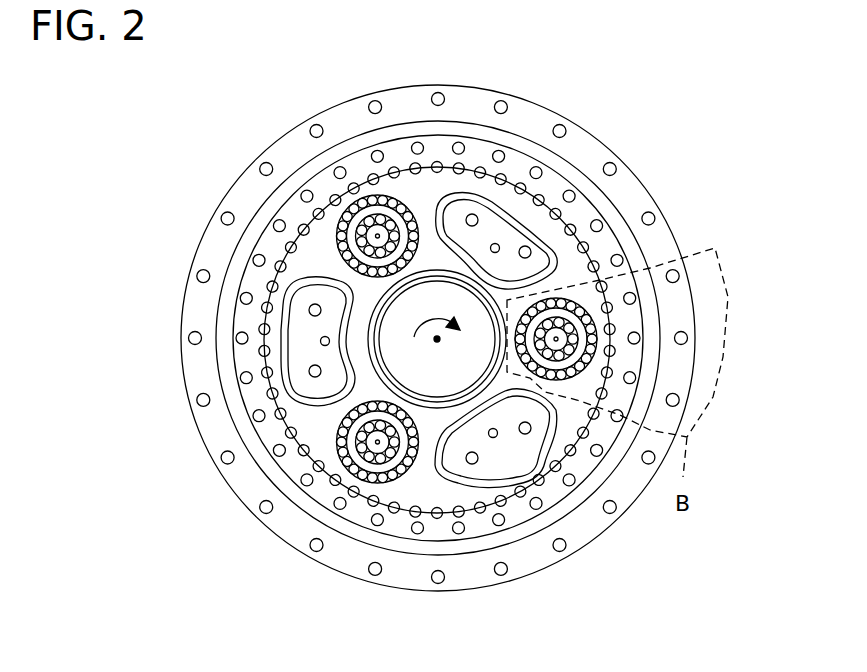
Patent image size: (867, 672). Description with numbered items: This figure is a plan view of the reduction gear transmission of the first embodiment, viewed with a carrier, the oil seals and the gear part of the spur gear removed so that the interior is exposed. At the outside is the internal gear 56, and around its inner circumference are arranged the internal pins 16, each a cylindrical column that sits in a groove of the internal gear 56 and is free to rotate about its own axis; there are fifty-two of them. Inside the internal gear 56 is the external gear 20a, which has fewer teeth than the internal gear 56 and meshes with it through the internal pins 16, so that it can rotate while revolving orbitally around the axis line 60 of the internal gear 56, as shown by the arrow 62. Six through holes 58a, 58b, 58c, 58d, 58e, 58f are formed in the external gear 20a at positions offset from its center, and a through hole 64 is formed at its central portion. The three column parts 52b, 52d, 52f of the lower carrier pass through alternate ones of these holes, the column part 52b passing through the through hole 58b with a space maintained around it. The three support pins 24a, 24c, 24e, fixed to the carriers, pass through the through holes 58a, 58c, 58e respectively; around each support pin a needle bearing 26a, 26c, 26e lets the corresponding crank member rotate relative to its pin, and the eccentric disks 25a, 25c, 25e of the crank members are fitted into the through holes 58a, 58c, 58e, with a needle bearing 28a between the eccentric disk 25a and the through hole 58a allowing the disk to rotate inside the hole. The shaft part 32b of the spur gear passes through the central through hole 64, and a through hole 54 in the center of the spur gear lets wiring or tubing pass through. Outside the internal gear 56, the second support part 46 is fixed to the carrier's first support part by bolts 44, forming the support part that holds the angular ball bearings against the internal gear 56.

The internal pin 16 is at (598, 398).
The external gear 20a is at (418, 190).
The support pin 24a is at (586, 310).
The support pin 24c is at (348, 210).
The support pin 24e is at (355, 468).
The eccentric disk 25a is at (558, 341).
The eccentric disk 25c is at (377, 235).
The eccentric disk 25e is at (377, 443).
The needle bearing 26a is at (586, 374).
The needle bearing 26c is at (336, 246).
The needle bearing 26e is at (358, 458).
The needle bearing 28a is at (576, 348).
The shaft part 32b is at (383, 366).
The bolt 44 is at (655, 218).
The second support part 46 is at (627, 193).
The column part 52b is at (512, 228).
The column part 52d is at (302, 340).
The column part 52f is at (517, 447).
The through hole 54 is at (378, 450).
The internal gear 56 is at (443, 155).
The through hole 58a is at (597, 339).
The through hole 58b is at (480, 198).
The through hole 58c is at (340, 185).
The through hole 58d is at (287, 305).
The through hole 58e is at (338, 446).
The through hole 58f is at (478, 500).
The axis line 60 is at (437, 344).
The arrow 62 is at (437, 317).
The through hole 64 is at (435, 395).